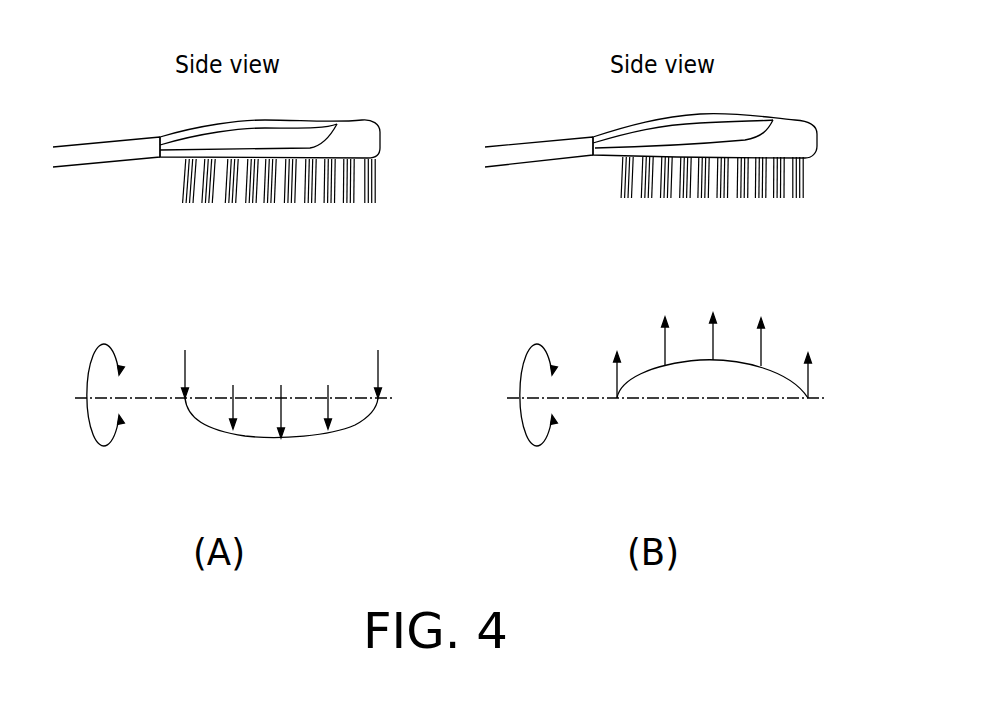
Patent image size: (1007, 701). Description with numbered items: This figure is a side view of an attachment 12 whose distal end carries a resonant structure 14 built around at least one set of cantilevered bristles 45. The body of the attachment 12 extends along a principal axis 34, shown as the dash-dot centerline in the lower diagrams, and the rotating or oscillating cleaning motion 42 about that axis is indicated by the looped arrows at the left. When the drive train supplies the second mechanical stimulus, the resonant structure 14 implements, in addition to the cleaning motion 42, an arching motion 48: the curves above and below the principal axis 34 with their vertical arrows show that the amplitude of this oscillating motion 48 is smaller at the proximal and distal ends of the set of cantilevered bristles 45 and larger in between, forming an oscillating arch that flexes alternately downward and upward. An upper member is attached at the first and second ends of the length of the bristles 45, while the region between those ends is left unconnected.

The attachment 12 is at (75, 124).
The resonant structure 14 is at (352, 92).
The set of cantilevered bristles 45 is at (360, 237).
The principal axis 34 is at (163, 398).
The cleaning motion 42 is at (103, 449).
The arching motion 48 is at (307, 437).